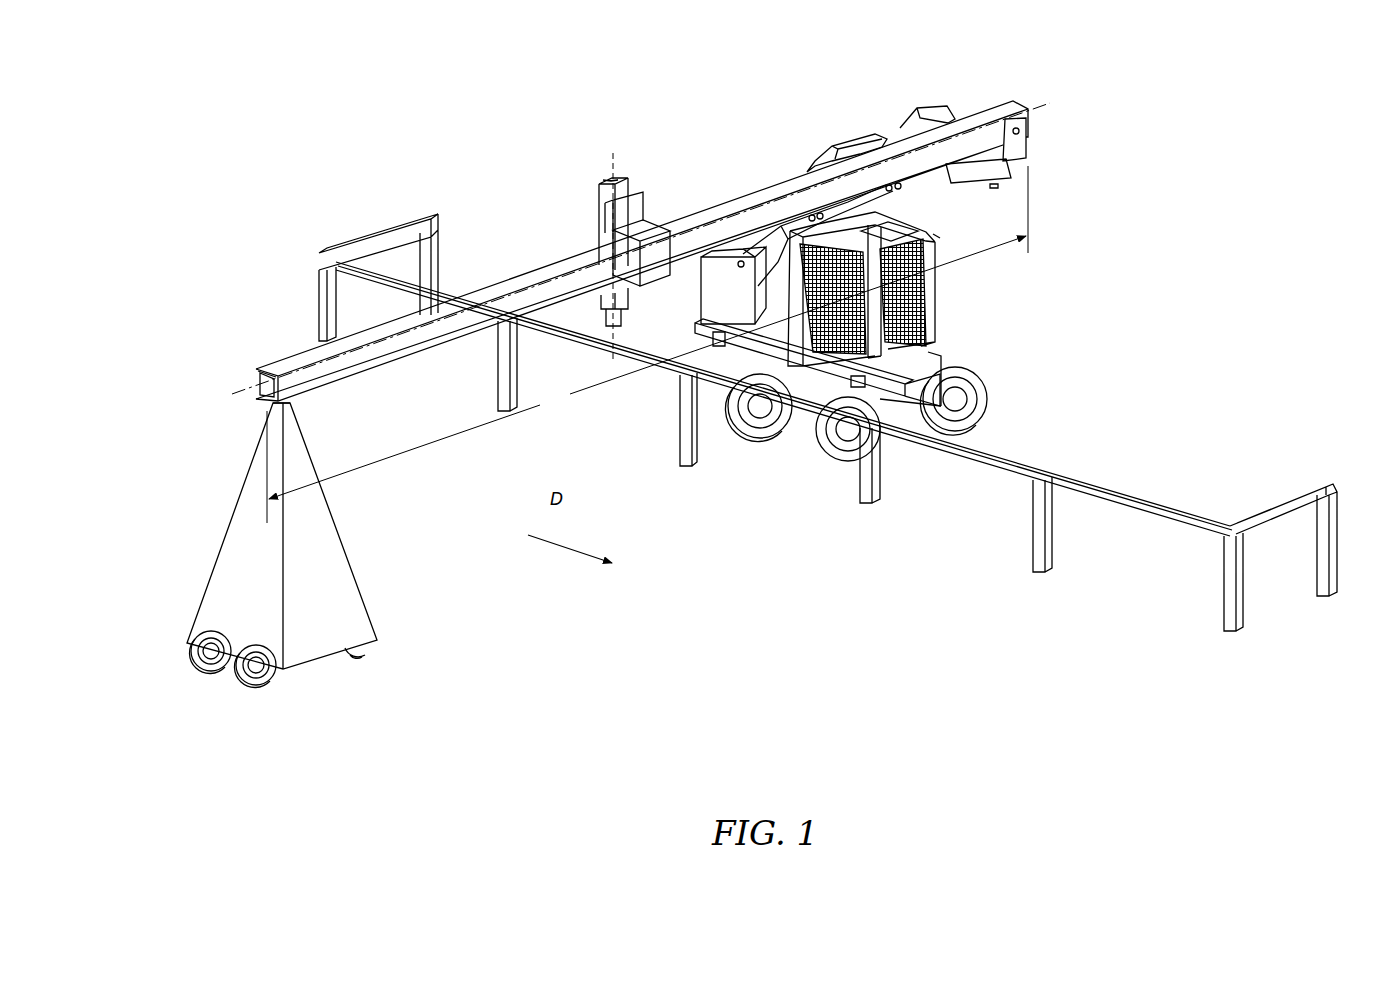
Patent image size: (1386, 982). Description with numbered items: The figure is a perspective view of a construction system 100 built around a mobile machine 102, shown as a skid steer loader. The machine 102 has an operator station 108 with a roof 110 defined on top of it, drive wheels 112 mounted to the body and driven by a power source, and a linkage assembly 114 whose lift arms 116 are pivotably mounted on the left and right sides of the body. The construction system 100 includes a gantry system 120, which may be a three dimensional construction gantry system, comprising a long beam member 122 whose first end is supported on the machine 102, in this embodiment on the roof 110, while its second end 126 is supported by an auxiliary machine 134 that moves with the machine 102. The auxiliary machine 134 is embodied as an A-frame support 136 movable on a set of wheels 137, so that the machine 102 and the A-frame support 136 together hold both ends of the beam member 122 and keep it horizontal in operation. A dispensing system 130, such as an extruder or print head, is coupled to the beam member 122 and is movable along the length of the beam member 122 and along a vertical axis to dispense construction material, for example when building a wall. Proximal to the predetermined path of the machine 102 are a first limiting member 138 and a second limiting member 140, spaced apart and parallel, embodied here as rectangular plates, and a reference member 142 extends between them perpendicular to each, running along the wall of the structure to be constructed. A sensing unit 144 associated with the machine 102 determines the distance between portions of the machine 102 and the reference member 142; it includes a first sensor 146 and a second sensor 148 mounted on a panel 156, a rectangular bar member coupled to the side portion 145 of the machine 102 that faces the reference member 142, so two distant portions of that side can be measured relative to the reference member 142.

The construction system 100 is at (240, 146).
The machine 102 is at (851, 126).
The operator station 108 is at (937, 236).
The roof 110 is at (884, 220).
The drive wheels 112 is at (984, 390).
The linkage assembly 114 is at (904, 106).
The lift arms 116 is at (817, 148).
The gantry system 120 is at (248, 369).
The beam member 122 is at (506, 275).
The second end 126 is at (253, 406).
The dispensing system 130 is at (590, 166).
The auxiliary machine 134 is at (195, 558).
The A-frame support 136 is at (198, 604).
The set of wheels 137 is at (253, 680).
The first limiting member 138 is at (1291, 495).
The second limiting member 140 is at (374, 232).
The reference member 142 is at (1226, 597).
The sensing unit 144 is at (698, 337).
The side portion 145 is at (723, 288).
The first sensor 146 is at (838, 387).
The second sensor 148 is at (703, 345).
The panel 156 is at (754, 373).